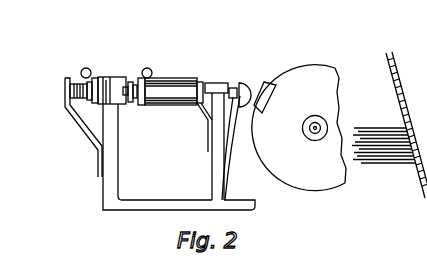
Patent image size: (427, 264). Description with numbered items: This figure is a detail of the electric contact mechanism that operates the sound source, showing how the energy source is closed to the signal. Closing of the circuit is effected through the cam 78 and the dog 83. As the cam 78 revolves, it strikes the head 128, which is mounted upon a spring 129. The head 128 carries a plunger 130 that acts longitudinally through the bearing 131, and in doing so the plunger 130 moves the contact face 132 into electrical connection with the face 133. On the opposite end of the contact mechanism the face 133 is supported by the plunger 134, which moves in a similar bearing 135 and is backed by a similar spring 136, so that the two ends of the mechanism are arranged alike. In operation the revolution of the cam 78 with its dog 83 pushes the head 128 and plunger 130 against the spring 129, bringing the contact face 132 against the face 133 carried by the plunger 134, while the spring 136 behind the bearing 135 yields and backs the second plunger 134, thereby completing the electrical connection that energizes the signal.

The cam 78 is at (345, 184).
The dog 83 is at (264, 81).
The head 128 is at (244, 82).
The spring 129 is at (230, 140).
The plunger 130 is at (233, 86).
The bearing 131 is at (210, 82).
The contact face 132 is at (139, 82).
The face 133 is at (133, 80).
The plunger 134 is at (127, 80).
The bearing 135 is at (101, 75).
The spring 136 is at (66, 88).